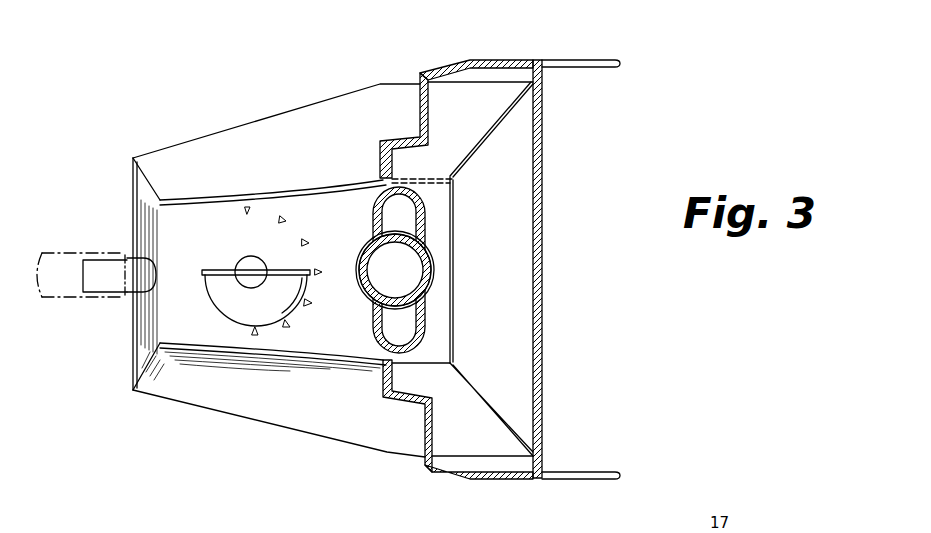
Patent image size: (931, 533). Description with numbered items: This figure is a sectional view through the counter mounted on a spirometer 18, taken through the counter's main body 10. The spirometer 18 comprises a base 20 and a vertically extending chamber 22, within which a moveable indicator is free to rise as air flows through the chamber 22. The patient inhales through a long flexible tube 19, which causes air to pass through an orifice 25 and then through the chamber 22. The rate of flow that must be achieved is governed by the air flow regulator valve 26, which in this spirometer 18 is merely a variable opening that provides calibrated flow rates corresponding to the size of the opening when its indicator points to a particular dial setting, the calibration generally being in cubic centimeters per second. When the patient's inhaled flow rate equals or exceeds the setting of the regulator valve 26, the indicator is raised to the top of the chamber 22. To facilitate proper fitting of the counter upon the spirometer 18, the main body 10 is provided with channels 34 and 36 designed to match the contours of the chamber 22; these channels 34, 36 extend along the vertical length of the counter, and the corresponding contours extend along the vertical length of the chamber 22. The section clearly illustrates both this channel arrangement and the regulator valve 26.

The main body 10 is at (546, 61).
The spirometer 18 is at (291, 103).
The long flexible tube 19 is at (52, 251).
The base 20 is at (170, 322).
The vertically extending chamber 22 is at (363, 300).
The orifice 25 is at (130, 266).
The regulator valve 26 is at (264, 257).
The channel 34 is at (433, 277).
The channel 36 is at (418, 215).